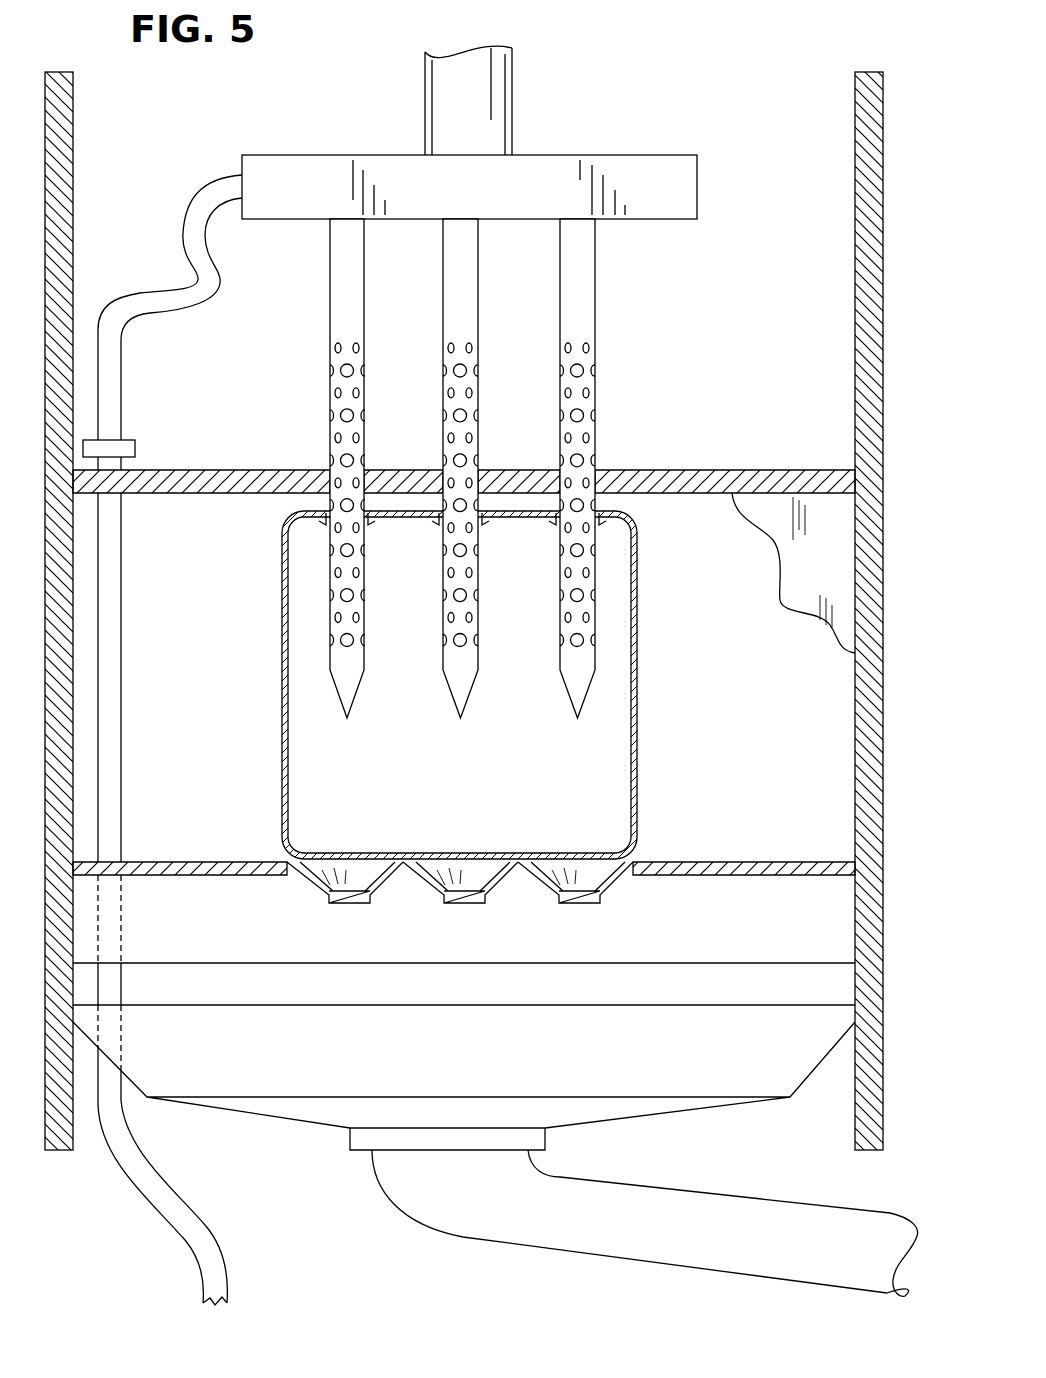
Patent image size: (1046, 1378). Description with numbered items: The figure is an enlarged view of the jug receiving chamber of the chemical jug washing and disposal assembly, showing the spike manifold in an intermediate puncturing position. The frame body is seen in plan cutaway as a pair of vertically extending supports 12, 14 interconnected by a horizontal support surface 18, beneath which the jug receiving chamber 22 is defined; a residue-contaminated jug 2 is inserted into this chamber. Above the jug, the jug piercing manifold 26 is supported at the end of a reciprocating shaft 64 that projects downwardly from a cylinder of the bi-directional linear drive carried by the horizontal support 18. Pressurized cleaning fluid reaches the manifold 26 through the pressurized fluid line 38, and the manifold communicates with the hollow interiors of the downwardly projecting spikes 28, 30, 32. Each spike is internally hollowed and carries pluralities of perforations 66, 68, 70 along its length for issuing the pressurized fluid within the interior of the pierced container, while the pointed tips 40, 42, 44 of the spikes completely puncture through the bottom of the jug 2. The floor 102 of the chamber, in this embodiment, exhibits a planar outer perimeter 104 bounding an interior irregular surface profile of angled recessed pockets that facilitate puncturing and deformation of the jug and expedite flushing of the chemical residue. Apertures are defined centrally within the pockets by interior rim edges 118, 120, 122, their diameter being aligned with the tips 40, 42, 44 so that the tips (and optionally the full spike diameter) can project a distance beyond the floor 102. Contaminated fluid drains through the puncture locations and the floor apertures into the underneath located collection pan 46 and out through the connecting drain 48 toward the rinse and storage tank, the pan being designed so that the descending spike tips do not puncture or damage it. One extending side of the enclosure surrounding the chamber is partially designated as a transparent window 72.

The jug 2 is at (282, 663).
The vertical extending support 12 is at (44, 315).
The vertical extending support 14 is at (883, 343).
The horizontal support surface 18 is at (185, 478).
The jug receiving chamber 22 is at (209, 606).
The jug piercing manifold 26 is at (293, 172).
The spike 28 is at (340, 290).
The spike 30 is at (460, 272).
The spike 32 is at (577, 290).
The pressurized fluid line 38 is at (193, 1213).
The pointed tip 40 is at (345, 692).
The pointed tip 42 is at (460, 688).
The pointed tip 44 is at (580, 683).
The collection pan 46 is at (461, 1072).
The drain 48 is at (540, 1225).
The reciprocating shaft 64 is at (512, 88).
The perforations 66 is at (338, 438).
The perforations 68 is at (447, 415).
The perforations 70 is at (593, 417).
The transparent window 72 is at (808, 553).
The floor 102 is at (703, 787).
The planar outer perimeter 104 is at (783, 862).
The interior rim edge 118 is at (345, 905).
The interior rim edge 120 is at (460, 905).
The interior rim edge 122 is at (575, 905).